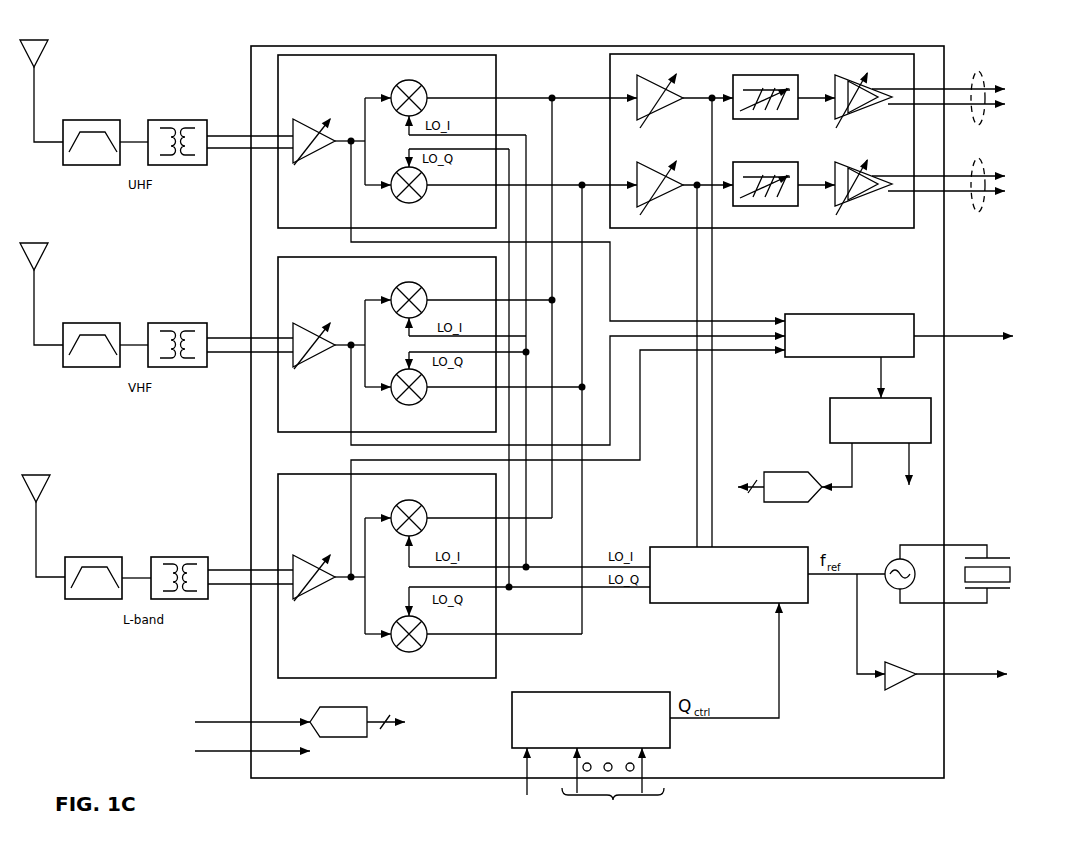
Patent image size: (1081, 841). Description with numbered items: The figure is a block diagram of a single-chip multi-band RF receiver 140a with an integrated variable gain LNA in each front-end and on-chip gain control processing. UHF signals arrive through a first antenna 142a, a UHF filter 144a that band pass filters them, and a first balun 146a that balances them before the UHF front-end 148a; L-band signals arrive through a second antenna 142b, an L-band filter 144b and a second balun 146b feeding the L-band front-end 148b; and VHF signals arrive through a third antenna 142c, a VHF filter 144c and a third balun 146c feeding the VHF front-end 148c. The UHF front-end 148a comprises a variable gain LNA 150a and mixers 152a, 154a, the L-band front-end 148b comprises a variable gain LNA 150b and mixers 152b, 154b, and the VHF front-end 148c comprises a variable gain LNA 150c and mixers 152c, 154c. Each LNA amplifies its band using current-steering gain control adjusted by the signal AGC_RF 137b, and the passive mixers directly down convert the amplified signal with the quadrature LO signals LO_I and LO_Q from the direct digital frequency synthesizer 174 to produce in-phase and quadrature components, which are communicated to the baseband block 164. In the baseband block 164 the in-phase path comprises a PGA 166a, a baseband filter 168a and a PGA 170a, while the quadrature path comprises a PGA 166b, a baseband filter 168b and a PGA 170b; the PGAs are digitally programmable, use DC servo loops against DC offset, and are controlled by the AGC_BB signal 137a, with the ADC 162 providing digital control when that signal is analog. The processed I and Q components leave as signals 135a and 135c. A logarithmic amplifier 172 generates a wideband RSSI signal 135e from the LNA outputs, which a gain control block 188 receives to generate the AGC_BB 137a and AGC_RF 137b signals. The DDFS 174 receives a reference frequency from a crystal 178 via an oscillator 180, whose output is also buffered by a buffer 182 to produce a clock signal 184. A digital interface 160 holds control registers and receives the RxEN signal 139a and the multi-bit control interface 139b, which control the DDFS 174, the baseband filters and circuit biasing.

The single-chip multi-band RF receiver 140a is at (944, 745).
The first antenna 142a is at (44, 53).
The second antenna 142b is at (46, 487).
The third antenna 142c is at (44, 255).
The UHF filter 144a is at (96, 100).
The L-band filter 144b is at (98, 538).
The VHF filter 144c is at (96, 304).
The first balun 146a is at (177, 100).
The second balun 146b is at (178, 538).
The third balun 146c is at (177, 304).
The UHF front-end 148a is at (496, 60).
The L-band front-end 148b is at (496, 650).
The VHF front-end 148c is at (297, 432).
The variable gain low noise amplifier 150a is at (303, 125).
The variable gain LNA 150b is at (303, 560).
The variable gain LNA 150c is at (303, 328).
The mixer 152a is at (418, 82).
The mixer 152b is at (418, 500).
The mixer 152c is at (418, 284).
The mixer 154a is at (418, 201).
The mixer 154b is at (418, 650).
The mixer 154c is at (418, 403).
The baseband block 164 is at (610, 60).
The programmable gain amplifier 166a is at (652, 84).
The PGA 166b is at (652, 170).
The baseband filter 168a is at (798, 80).
The baseband filter 168b is at (798, 167).
The PGA 170a is at (872, 84).
The PGA 170b is at (872, 172).
The processed I component signal 135a is at (978, 72).
The processed Q component signal 135c is at (978, 159).
The RSSI signal 135e is at (957, 336).
The logarithmic amplifier 172 is at (826, 314).
The gain control block 188 is at (830, 402).
The ADC 162 is at (770, 471).
The AGC_BB signal 137a is at (852, 456).
The AGC_RF signal 137b is at (909, 456).
The direct digital frequency synthesizer 174 is at (731, 603).
The digital interface 160 is at (572, 692).
The RxEN signal 139a is at (524, 790).
The control interface 139b is at (662, 814).
The crystal 178 is at (994, 558).
The oscillator 180 is at (896, 560).
The buffer 182 is at (900, 666).
The clock signal 184 is at (972, 673).